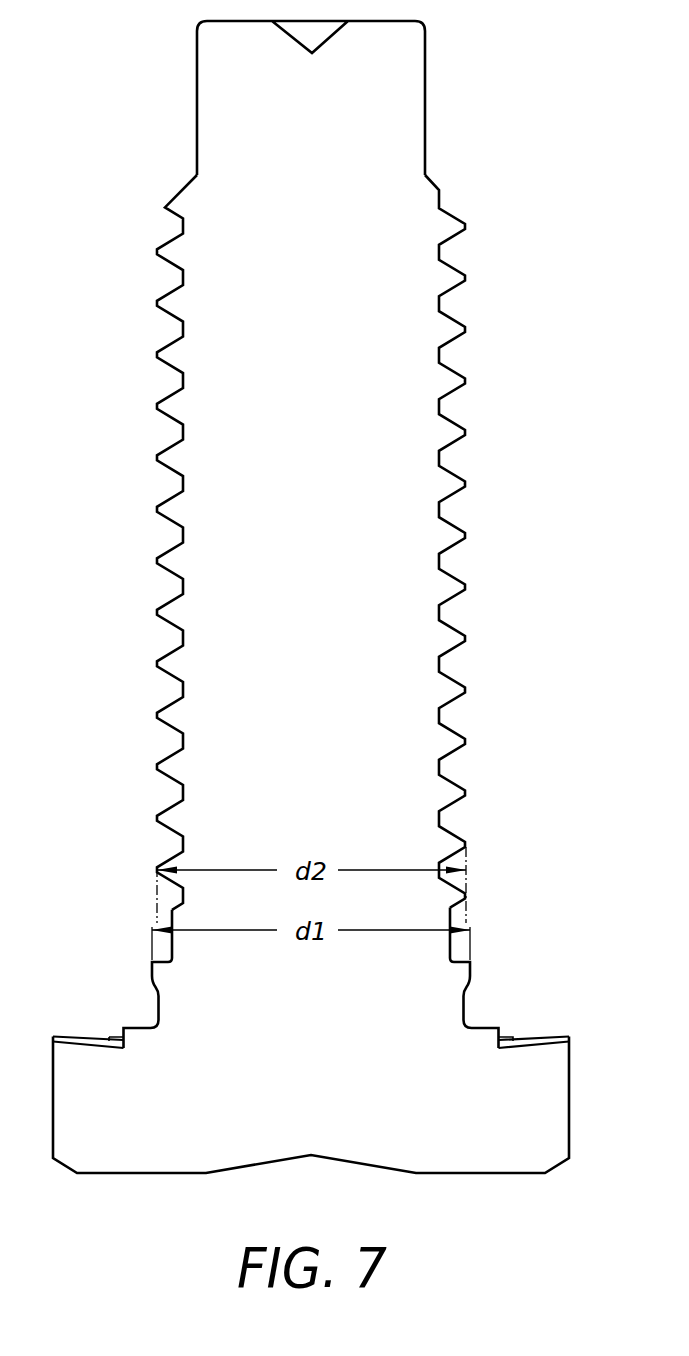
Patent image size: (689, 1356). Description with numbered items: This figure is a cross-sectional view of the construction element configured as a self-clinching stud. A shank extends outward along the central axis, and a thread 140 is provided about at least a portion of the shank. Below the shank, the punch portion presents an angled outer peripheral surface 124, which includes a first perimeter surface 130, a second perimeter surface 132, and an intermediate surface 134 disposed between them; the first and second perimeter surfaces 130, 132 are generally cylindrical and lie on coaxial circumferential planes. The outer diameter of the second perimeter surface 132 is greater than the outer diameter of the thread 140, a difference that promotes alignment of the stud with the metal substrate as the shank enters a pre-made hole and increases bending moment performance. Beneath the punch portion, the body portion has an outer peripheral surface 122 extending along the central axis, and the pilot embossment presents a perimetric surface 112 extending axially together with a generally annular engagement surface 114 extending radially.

The thread 140 is at (465, 583).
The outer peripheral surface of the punch portion 124 is at (483, 995).
The second perimeter surface 132 is at (148, 966).
The intermediate surface 134 is at (157, 990).
The first perimeter surface 130 is at (158, 1007).
The outer peripheral surface of the body portion 122 is at (570, 1115).
The perimetric surface 112 is at (517, 1032).
The engagement surface 114 is at (493, 1027).